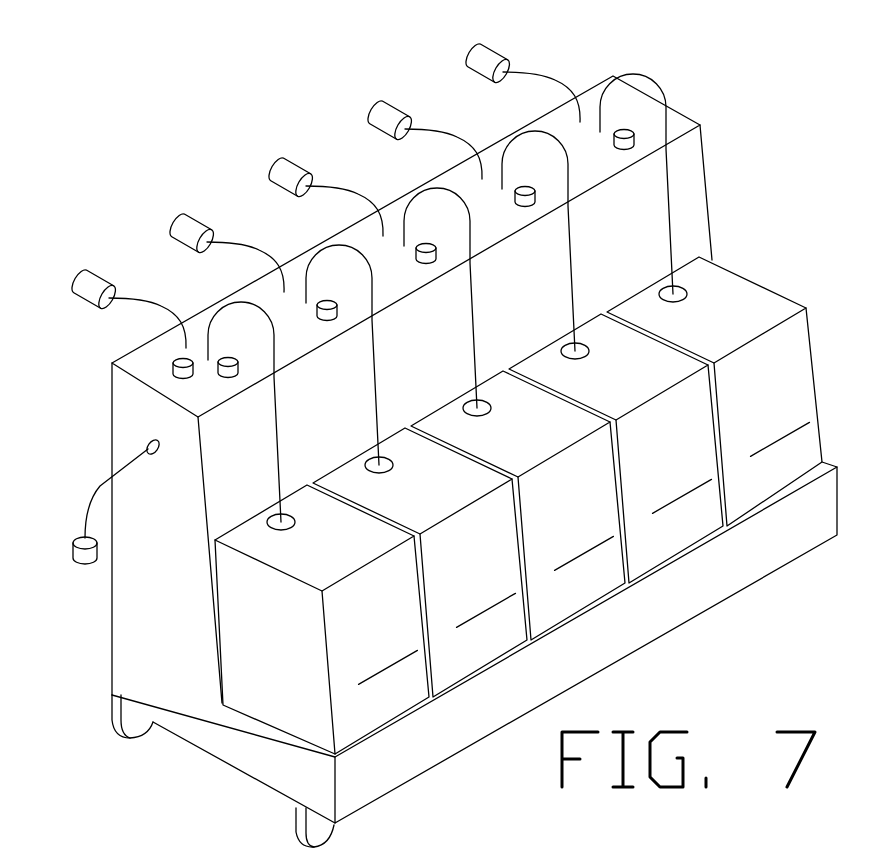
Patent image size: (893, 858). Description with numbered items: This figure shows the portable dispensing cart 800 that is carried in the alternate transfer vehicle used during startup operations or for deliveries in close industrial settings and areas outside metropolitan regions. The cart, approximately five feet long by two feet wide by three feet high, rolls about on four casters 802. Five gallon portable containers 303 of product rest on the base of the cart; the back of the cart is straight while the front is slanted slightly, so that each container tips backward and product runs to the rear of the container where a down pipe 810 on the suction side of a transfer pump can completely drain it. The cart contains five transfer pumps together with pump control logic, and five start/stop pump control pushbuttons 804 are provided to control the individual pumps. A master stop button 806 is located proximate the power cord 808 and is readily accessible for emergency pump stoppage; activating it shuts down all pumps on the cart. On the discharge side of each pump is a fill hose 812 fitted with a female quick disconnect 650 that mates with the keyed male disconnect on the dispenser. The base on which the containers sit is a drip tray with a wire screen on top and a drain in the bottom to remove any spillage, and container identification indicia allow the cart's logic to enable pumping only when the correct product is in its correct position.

The portable dispensing cart 800 is at (703, 153).
The casters 802 is at (293, 817).
The portable containers 303 is at (518, 505).
The down pipe 810 is at (370, 387).
The start/stop pump control pushbuttons 804 is at (338, 320).
The master stop button 806 is at (177, 365).
The power cord 808 is at (85, 498).
The fill hose 812 is at (240, 250).
The female quick disconnect 650 is at (175, 223).